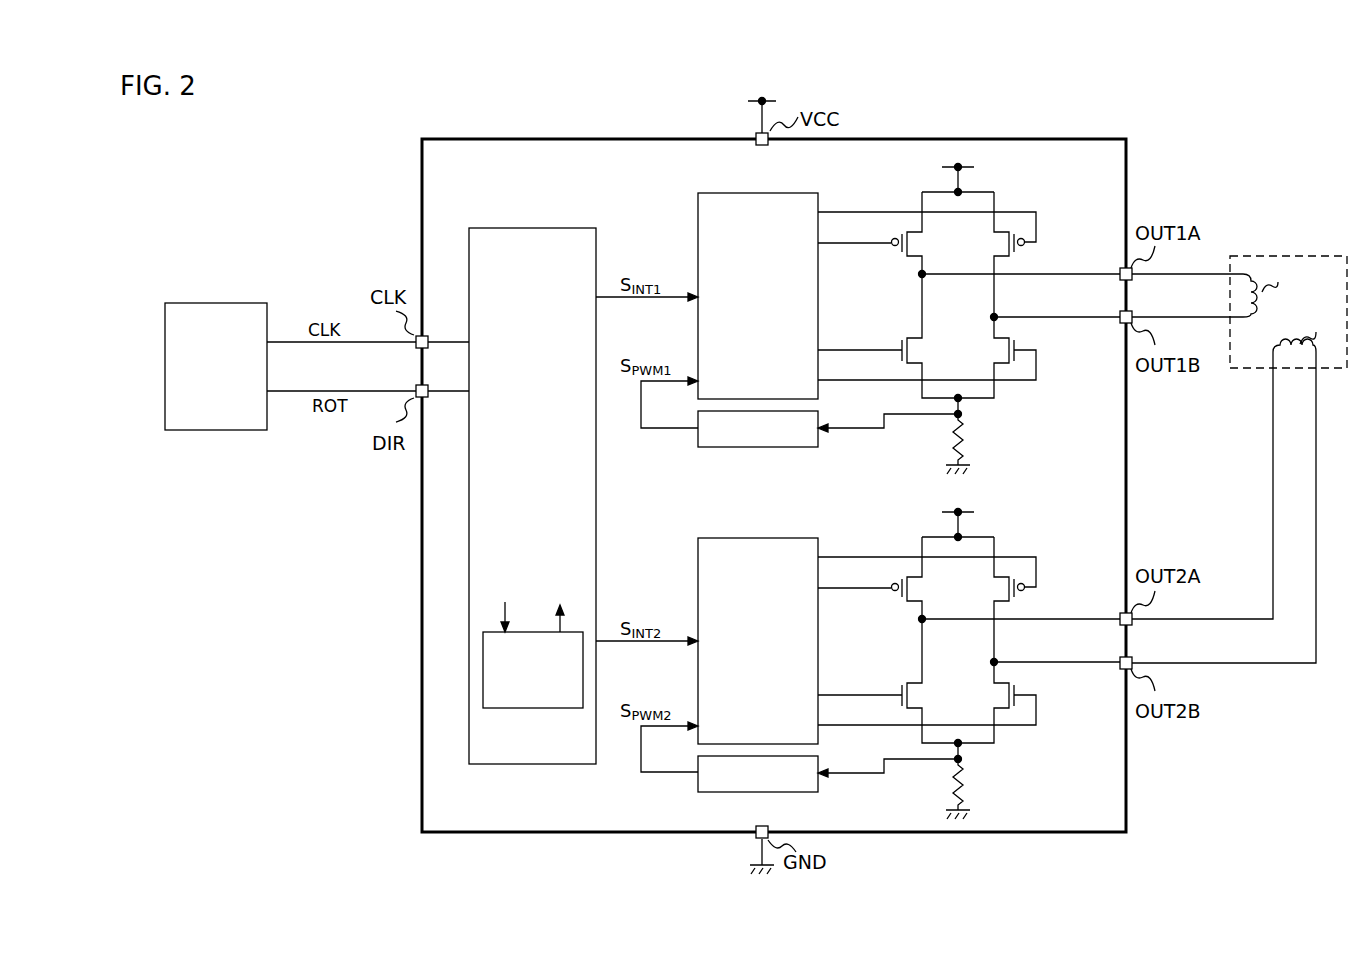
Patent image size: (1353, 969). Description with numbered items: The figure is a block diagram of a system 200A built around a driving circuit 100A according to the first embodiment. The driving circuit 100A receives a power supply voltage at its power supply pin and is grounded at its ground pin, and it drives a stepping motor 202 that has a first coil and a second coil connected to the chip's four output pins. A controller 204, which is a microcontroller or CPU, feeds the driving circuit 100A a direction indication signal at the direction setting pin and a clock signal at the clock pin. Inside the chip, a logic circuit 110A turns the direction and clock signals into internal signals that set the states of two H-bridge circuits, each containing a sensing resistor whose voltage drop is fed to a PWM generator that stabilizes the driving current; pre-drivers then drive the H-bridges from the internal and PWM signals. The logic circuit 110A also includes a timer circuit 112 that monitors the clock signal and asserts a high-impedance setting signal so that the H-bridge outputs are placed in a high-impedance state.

The driving circuit 100A is at (966, 120).
The system 200A is at (1341, 108).
The controller 204 is at (208, 302).
The logic circuit 110A is at (540, 210).
The timer circuit 112 is at (525, 708).
The stepping motor 202 is at (1295, 256).